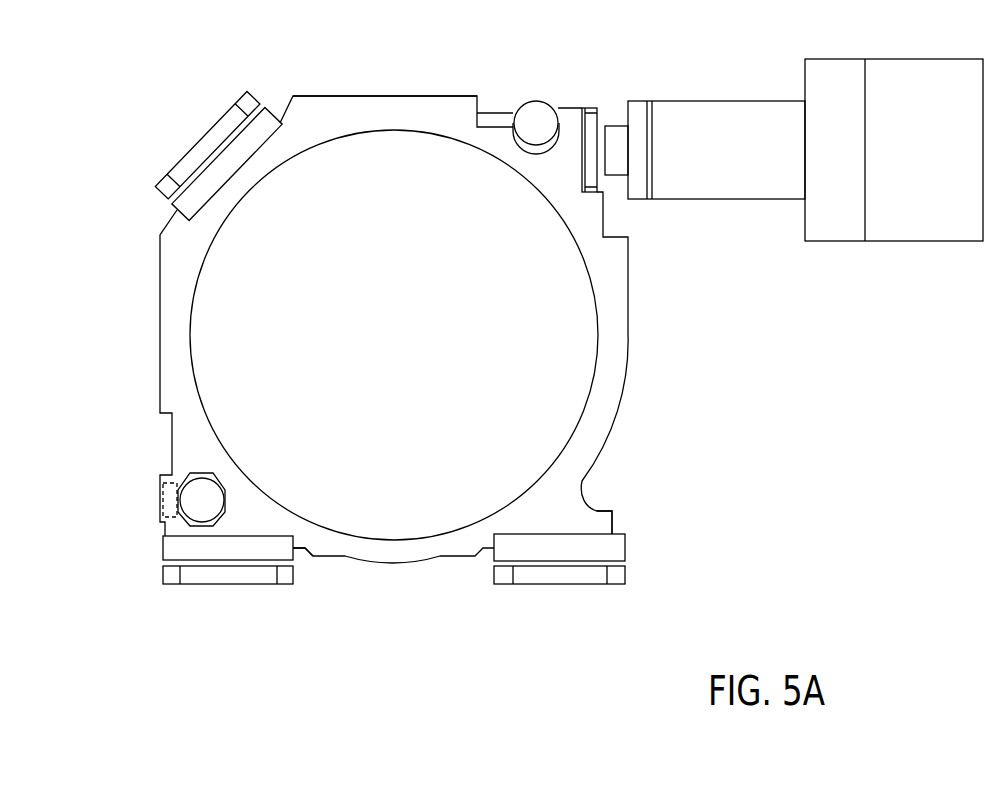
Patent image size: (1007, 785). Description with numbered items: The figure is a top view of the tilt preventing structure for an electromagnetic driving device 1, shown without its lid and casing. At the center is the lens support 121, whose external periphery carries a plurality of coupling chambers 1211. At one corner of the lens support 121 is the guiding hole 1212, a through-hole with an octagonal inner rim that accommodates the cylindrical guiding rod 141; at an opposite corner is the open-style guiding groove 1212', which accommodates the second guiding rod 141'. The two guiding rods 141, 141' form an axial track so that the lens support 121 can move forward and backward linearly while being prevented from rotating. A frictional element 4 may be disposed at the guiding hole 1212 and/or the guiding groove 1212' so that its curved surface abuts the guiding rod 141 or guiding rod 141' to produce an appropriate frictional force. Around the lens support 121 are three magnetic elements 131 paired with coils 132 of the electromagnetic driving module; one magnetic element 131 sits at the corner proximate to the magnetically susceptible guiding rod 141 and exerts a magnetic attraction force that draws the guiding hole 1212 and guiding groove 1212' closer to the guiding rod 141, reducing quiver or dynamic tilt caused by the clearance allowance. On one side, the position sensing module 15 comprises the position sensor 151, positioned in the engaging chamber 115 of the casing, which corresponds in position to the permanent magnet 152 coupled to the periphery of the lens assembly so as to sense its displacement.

The tilt preventing structure for an electromagnetic driving device 1 is at (90, 198).
The frictional element 4 is at (160, 495).
The position sensing module 15 is at (786, 203).
The engaging chamber 115 is at (582, 125).
The lens support 121 is at (610, 385).
The coupling chambers 1211 is at (267, 140).
The guiding hole 1212 is at (253, 467).
The guiding groove 1212' is at (490, 177).
The magnetic elements 131 is at (228, 158).
The coils 132 is at (193, 158).
The guiding rod 141 is at (137, 474).
The guiding rod 141' is at (545, 80).
The position sensor 151 is at (722, 180).
The permanent magnet 152 is at (590, 163).